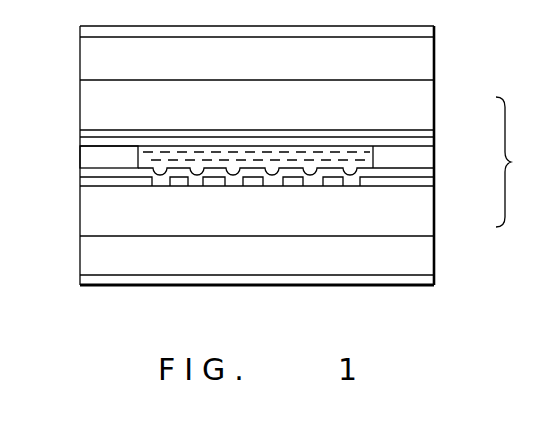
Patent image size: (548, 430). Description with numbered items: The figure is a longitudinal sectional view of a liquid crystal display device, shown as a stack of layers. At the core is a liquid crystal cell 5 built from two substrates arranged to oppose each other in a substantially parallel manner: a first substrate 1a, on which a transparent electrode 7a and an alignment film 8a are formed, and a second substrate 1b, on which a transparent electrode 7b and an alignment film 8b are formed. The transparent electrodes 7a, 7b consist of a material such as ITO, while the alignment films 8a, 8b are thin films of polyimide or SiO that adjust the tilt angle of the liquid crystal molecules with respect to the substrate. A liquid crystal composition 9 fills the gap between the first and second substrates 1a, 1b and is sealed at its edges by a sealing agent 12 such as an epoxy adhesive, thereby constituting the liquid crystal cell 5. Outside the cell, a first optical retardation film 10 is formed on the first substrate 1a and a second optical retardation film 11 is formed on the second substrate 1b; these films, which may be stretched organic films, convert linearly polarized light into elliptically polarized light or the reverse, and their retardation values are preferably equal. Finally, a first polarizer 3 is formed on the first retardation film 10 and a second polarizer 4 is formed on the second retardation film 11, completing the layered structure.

The first substrate 1a is at (424, 219).
The second substrate 1b is at (424, 107).
The first polarizer 3 is at (434, 280).
The second polarizer 4 is at (434, 31).
The liquid crystal cell 5 is at (512, 162).
The transparent electrode 7a is at (434, 187).
The transparent electrode 7b is at (434, 134).
The alignment film 8a is at (434, 172).
The alignment film 8b is at (434, 147).
The liquid crystal composition 9 is at (168, 152).
The first optical retardation film 10 is at (424, 256).
The second optical retardation film 11 is at (428, 63).
The sealing agent 12 is at (88, 158).